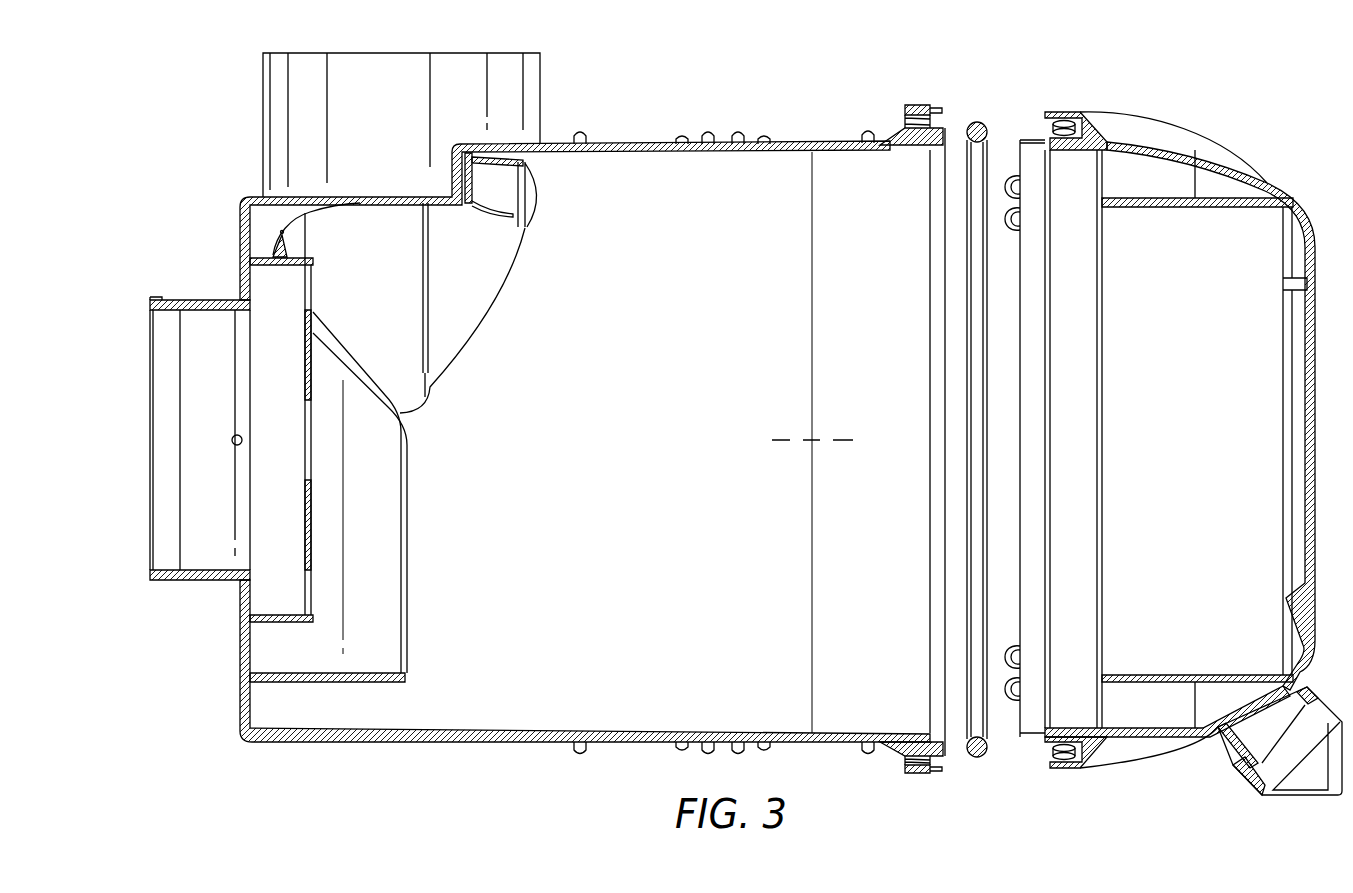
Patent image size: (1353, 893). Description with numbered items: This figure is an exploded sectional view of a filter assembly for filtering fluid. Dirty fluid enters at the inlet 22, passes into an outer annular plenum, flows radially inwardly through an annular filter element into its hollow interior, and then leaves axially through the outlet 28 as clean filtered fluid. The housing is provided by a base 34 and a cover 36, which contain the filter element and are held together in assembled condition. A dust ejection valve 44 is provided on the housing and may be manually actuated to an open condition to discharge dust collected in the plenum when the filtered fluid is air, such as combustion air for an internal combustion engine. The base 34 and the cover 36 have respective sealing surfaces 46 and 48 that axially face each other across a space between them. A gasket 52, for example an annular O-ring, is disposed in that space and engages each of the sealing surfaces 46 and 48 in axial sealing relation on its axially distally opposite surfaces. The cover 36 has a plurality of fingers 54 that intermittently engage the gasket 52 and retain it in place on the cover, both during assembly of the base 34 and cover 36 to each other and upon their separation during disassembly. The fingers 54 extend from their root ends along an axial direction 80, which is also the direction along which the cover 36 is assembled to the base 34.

The inlet 22 is at (502, 53).
The outlet 28 is at (157, 568).
The base 34 is at (507, 740).
The cover 36 is at (1134, 738).
The dust ejection valve 44 is at (1295, 798).
The sealing surface 46 is at (942, 747).
The sealing surface 48 is at (1052, 745).
The gasket 52 is at (978, 758).
The fingers 54 is at (1048, 130).
The axial direction 80 is at (785, 438).